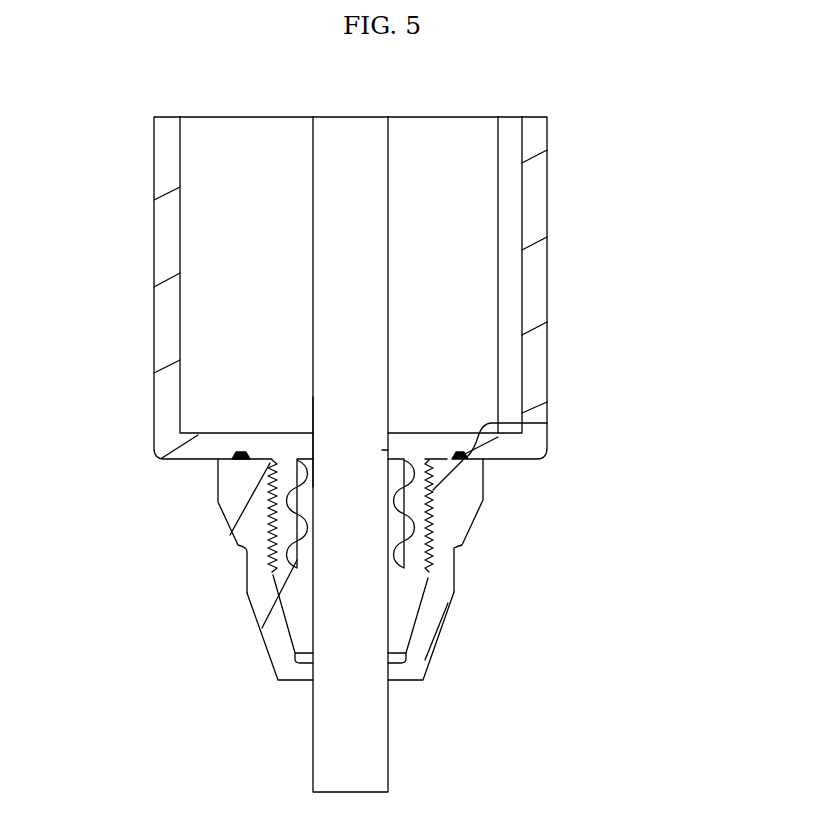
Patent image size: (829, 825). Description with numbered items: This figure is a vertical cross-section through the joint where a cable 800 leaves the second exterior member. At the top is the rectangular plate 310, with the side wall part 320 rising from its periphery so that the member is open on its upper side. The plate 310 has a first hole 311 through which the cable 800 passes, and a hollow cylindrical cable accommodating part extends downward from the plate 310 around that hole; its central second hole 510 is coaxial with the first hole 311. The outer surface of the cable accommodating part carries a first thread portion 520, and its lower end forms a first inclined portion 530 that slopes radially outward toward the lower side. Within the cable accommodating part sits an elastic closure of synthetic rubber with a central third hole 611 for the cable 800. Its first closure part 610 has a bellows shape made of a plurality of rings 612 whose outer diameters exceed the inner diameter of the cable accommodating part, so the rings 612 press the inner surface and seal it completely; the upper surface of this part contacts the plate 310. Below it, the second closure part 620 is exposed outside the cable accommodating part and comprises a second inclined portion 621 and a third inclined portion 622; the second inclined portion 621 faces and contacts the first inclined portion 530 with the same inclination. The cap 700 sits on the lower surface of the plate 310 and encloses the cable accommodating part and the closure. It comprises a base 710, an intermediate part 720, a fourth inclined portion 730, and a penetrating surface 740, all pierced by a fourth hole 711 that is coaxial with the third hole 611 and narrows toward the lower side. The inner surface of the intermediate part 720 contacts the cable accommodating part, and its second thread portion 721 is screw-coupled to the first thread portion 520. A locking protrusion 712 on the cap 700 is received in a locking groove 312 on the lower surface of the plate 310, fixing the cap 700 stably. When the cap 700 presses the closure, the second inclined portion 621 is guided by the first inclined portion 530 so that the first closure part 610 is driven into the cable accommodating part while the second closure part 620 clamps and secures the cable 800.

The plate 310 is at (498, 447).
The first hole 311 is at (382, 450).
The locking groove 312 is at (462, 454).
The side wall part 320 is at (163, 223).
The second hole 510 is at (295, 494).
The first thread portion 520 is at (267, 517).
The first inclined portion 530 is at (272, 562).
The first closure part 610 is at (194, 314).
The third hole 611 is at (313, 487).
The rings 612 is at (268, 476).
The second closure part 620 is at (200, 615).
The second inclined portion 621 is at (272, 587).
The third inclined portion 622 is at (295, 652).
The cap 700 is at (538, 566).
The base 710 is at (458, 497).
The fourth hole 711 is at (408, 655).
The locking protrusion 712 is at (468, 459).
The intermediate part 720 is at (453, 552).
The second thread portion 721 is at (267, 498).
The fourth inclined portion 730 is at (440, 598).
The penetrating surface 740 is at (425, 667).
The cable 800 is at (373, 745).